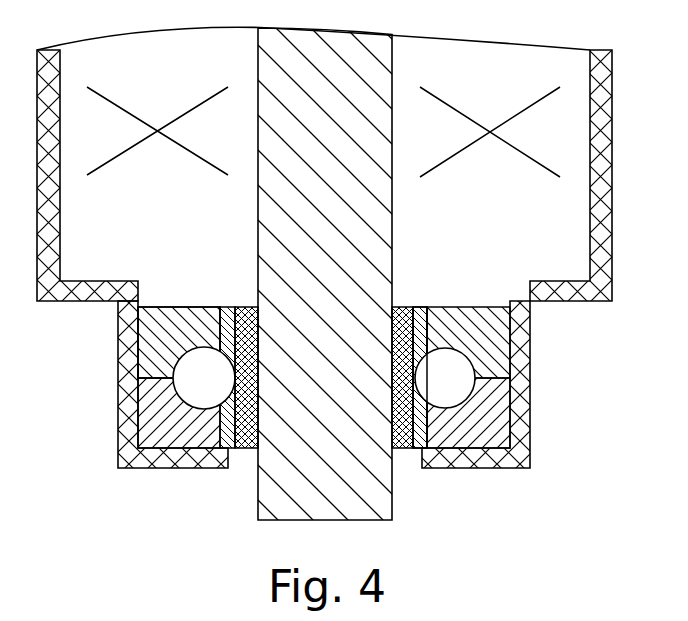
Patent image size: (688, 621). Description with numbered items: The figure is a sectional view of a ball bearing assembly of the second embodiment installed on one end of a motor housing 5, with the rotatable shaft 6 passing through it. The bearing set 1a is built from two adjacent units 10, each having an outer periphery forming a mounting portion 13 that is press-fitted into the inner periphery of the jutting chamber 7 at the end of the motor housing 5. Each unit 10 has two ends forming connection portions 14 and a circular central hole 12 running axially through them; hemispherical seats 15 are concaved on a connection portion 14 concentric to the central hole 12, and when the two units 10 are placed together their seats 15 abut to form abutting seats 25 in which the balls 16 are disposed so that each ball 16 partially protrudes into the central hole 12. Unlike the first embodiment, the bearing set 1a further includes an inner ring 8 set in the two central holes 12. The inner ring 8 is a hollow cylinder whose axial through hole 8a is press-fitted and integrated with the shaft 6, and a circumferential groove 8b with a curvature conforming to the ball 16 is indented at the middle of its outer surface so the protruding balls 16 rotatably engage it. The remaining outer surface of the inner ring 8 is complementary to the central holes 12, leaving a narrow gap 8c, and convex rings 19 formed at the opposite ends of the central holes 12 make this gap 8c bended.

The bearing set 1a is at (502, 322).
The motor housing 5 is at (50, 71).
The shaft 6 is at (320, 478).
The jutting chamber 7 is at (128, 435).
The inner ring 8 is at (467, 322).
The axial through hole 8a is at (391, 350).
The circumferential groove 8b is at (415, 378).
The gap 8c is at (443, 346).
The unit 10 is at (493, 432).
The central hole 12 is at (472, 462).
The mounting portion 13 is at (157, 326).
The connection portion 14 is at (130, 322).
The hemispherical seat 15 is at (207, 345).
The ball 16 is at (200, 380).
The convex ring 19 is at (443, 458).
The abutting seat 25 is at (176, 350).